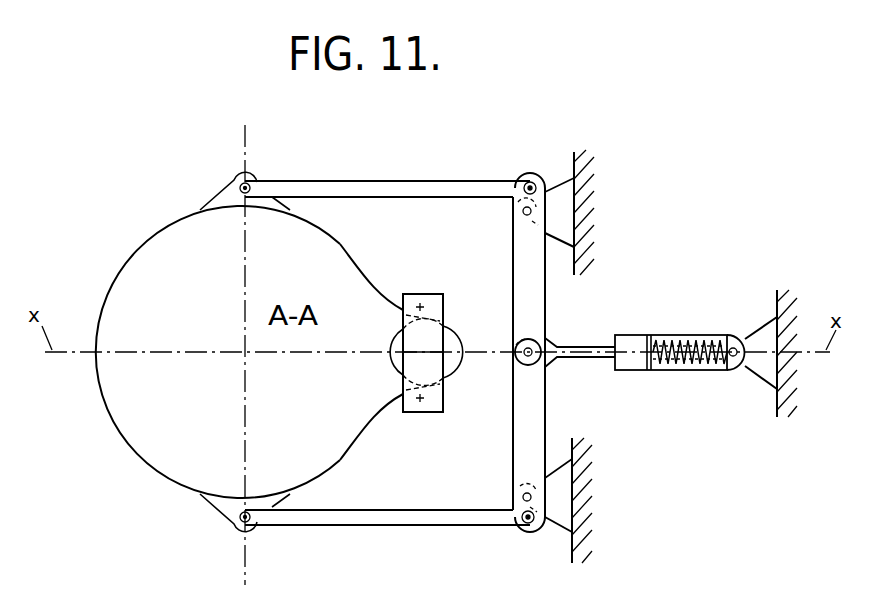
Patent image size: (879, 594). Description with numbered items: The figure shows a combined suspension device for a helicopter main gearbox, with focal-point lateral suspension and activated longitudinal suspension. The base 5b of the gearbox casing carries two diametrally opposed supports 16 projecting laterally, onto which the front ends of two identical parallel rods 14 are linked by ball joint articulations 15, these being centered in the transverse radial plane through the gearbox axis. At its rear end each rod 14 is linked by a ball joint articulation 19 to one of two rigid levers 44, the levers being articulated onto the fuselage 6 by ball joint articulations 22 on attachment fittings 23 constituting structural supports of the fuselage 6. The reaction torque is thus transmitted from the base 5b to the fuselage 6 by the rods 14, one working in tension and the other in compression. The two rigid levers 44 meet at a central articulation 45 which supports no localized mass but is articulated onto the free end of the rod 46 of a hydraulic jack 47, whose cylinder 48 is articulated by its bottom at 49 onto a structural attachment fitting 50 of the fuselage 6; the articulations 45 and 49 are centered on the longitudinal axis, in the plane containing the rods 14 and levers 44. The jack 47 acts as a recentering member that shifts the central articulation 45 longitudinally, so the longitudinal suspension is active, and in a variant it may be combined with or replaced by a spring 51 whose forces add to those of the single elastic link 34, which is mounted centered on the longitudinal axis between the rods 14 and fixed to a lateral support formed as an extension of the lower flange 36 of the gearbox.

The base of the box 5b is at (140, 434).
The fuselage 6 is at (585, 178).
The rods 14 is at (397, 190).
The ball joint articulation 15 is at (250, 185).
The supports 16 is at (232, 197).
The ball joint articulation 19 is at (521, 183).
The ball joint articulation 22 is at (522, 213).
The attachment fitting 23 is at (558, 196).
The single elastic link 34 is at (396, 378).
The lower flange 36 is at (452, 366).
The rigid levers 44 is at (522, 294).
The central articulation 45 is at (543, 340).
The rod 46 is at (588, 359).
The hydraulic jack 47 is at (692, 368).
The cylinder 48 is at (686, 335).
The articulation 49 is at (731, 360).
The structural attachment fitting 50 is at (762, 338).
The spring 51 is at (662, 338).